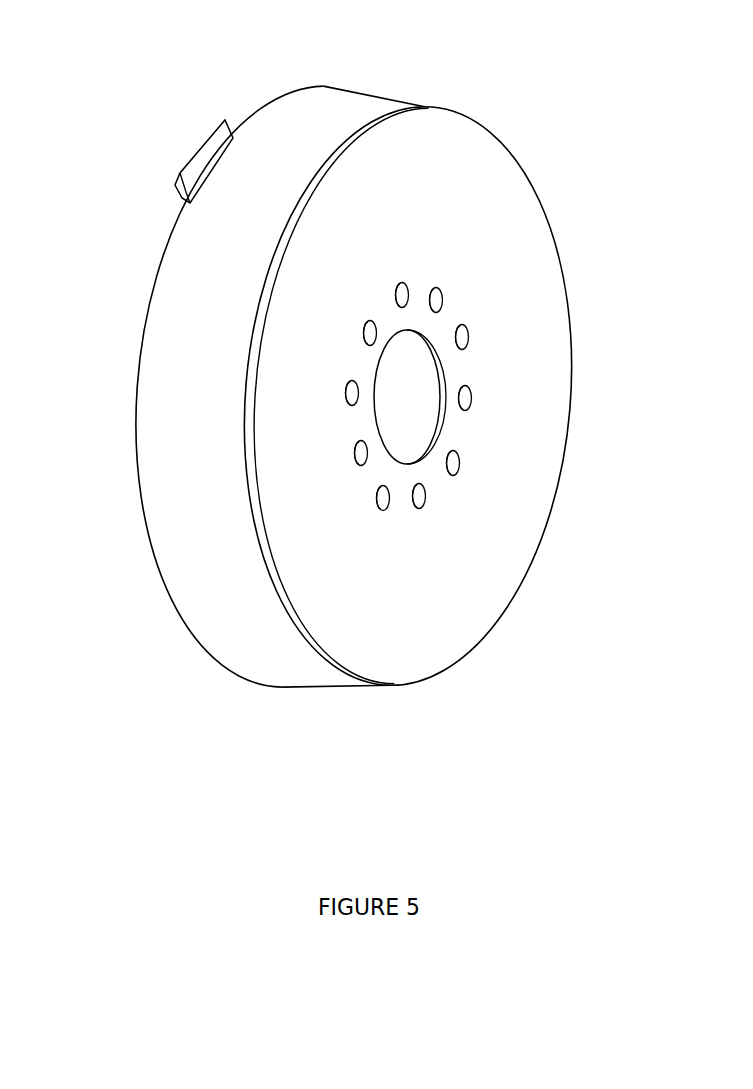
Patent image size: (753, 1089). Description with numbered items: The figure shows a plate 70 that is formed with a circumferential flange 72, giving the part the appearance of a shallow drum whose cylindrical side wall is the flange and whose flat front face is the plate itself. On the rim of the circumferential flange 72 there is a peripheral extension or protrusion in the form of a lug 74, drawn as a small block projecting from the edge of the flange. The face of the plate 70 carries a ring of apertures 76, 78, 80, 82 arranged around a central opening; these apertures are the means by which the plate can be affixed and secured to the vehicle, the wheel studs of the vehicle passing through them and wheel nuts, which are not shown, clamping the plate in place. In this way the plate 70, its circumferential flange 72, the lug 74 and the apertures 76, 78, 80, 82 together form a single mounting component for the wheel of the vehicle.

The plate 70 is at (389, 623).
The circumferential flange 72 is at (168, 458).
The lug 74 is at (202, 143).
The aperture 76 is at (405, 283).
The aperture 78 is at (442, 300).
The aperture 80 is at (472, 397).
The aperture 82 is at (425, 497).